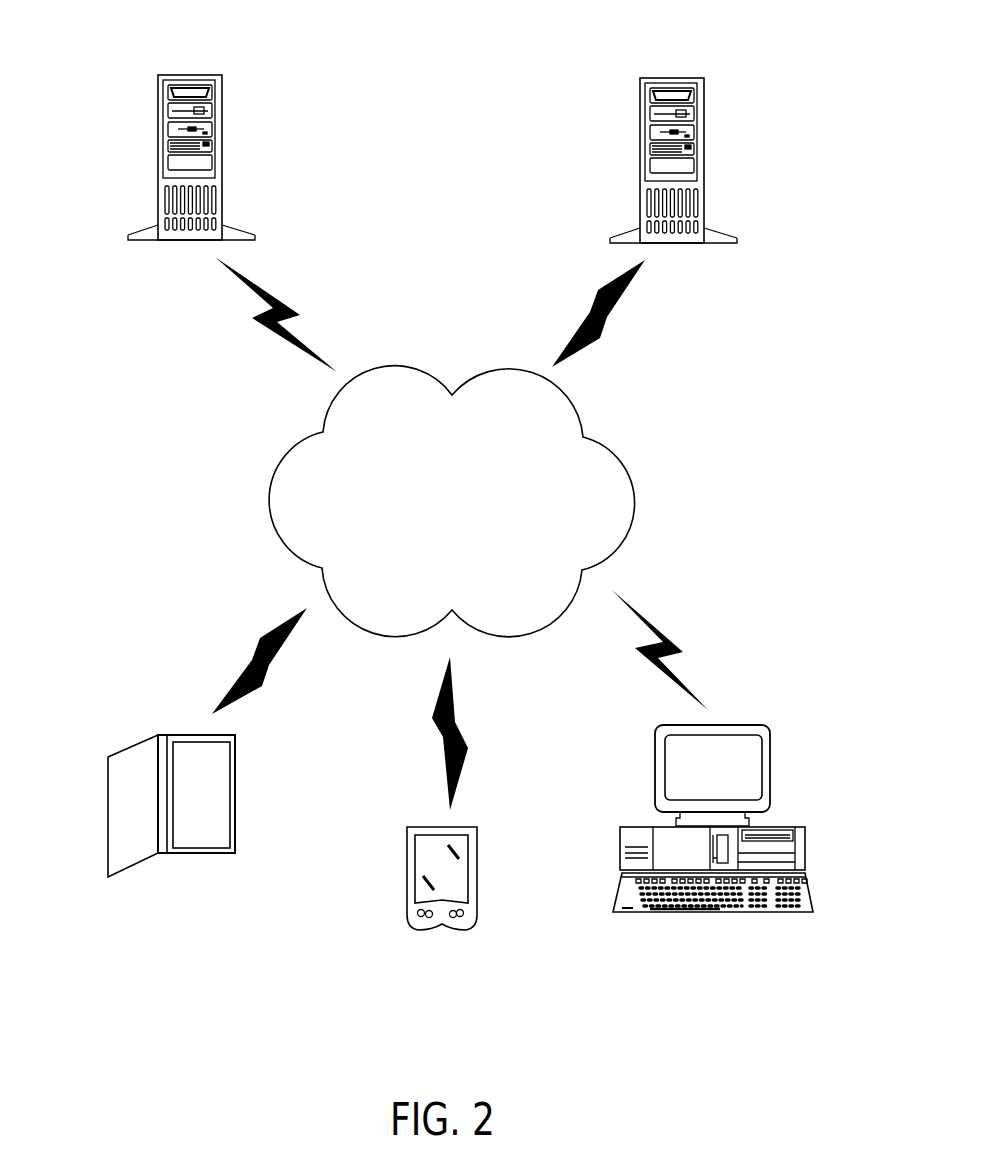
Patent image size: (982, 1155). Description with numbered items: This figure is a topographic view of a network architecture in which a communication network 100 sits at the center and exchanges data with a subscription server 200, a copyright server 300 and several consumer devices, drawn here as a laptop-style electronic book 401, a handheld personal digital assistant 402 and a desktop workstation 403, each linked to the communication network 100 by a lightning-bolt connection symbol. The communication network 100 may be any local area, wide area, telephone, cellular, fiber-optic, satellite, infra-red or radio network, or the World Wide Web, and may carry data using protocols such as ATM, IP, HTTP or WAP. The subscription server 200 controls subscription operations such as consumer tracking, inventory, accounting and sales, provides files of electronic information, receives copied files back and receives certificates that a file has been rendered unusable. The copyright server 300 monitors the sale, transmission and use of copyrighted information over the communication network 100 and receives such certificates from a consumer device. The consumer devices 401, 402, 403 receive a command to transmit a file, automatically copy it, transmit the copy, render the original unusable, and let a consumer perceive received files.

The communication network 100 is at (395, 362).
The subscription server 200 is at (188, 73).
The copyright server 300 is at (670, 75).
The consumer device 401 is at (107, 803).
The consumer device 402 is at (407, 878).
The personal computer terminal 403 is at (805, 848).